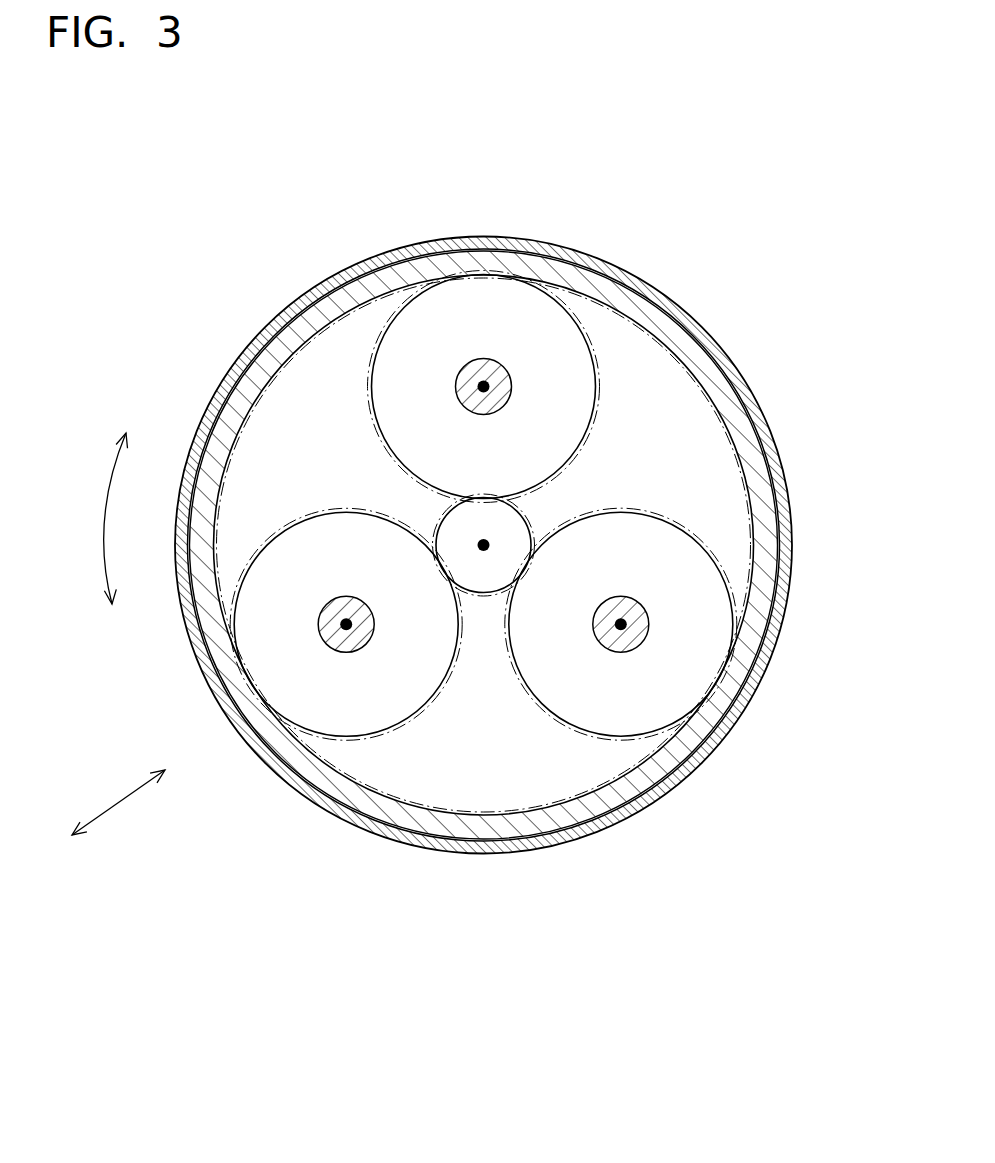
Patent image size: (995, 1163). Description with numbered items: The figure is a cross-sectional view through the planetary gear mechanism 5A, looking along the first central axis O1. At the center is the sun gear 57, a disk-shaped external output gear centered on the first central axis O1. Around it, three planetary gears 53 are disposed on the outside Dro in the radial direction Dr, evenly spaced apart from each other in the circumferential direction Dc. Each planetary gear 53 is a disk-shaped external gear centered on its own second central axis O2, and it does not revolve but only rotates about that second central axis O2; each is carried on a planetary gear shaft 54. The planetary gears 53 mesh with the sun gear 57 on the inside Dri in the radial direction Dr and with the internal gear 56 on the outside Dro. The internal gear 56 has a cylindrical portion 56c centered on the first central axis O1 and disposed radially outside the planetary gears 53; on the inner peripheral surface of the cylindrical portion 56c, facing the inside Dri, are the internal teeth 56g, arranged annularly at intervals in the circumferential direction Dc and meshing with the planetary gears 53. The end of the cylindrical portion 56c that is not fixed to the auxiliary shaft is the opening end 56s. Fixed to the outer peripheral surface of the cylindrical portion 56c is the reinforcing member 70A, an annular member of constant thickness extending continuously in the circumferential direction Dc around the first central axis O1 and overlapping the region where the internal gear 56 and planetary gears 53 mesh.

The planetary gear mechanism 5A is at (470, 234).
The reinforcing member 70A is at (563, 254).
The planetary gears 53 is at (555, 323).
The planetary gear shafts 54 is at (460, 378).
The internal gear 56 is at (722, 348).
The opening end 56s is at (765, 442).
The internal teeth 56g is at (470, 805).
The cylindrical portion 56c is at (612, 792).
The sun gear 57 is at (484, 594).
The first central axis O1 is at (486, 542).
The second central axis O2 is at (483, 386).
The circumferential direction Dc is at (100, 518).
The radial direction Dr is at (118, 802).
The inside in the radial direction Dri is at (173, 756).
The outside in the radial direction Dro is at (65, 847).